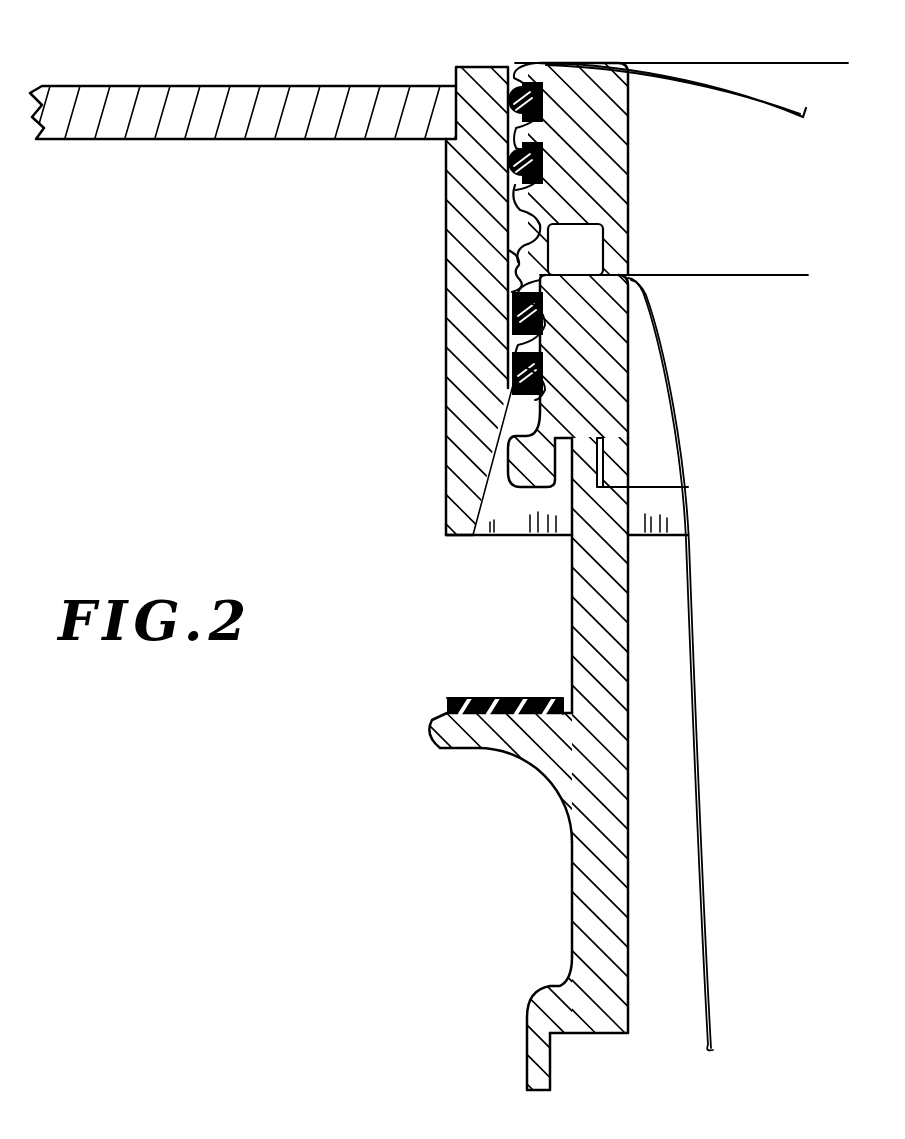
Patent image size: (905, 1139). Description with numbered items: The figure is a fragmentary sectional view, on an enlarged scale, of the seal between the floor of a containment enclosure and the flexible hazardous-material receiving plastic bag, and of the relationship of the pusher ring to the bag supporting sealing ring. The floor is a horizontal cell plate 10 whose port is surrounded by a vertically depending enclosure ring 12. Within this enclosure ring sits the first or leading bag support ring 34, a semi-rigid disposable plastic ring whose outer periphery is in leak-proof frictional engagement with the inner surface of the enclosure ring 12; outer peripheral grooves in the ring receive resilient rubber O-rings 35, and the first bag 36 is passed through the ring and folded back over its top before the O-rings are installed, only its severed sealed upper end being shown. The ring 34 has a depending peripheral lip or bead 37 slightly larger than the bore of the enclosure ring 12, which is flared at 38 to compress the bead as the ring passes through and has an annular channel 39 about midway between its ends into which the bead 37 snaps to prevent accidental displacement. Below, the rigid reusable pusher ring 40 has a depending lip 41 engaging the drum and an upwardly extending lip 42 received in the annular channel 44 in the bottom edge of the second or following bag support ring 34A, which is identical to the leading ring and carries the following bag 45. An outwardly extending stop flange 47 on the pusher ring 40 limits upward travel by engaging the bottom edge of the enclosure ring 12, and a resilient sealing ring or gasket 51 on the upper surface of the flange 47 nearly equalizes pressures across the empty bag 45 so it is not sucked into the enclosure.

The cell plate 10 is at (268, 86).
The enclosure ring 12 is at (447, 430).
The bag support ring 34 is at (576, 72).
The second bag support ring 34A is at (616, 328).
The O-ring 35 is at (513, 160).
The first bag 36 is at (768, 95).
The lip or bead 37 is at (513, 236).
The flared portion 38 is at (487, 490).
The annular channel 39 is at (505, 276).
The pusher ring 40 is at (583, 880).
The depending lip 41 is at (530, 1060).
The upwardly extending lip 42 is at (588, 468).
The annular channel 44 is at (603, 245).
The second bag 45 is at (700, 650).
The stop flange 47 is at (425, 739).
The sealing ring or gasket 51 is at (494, 698).